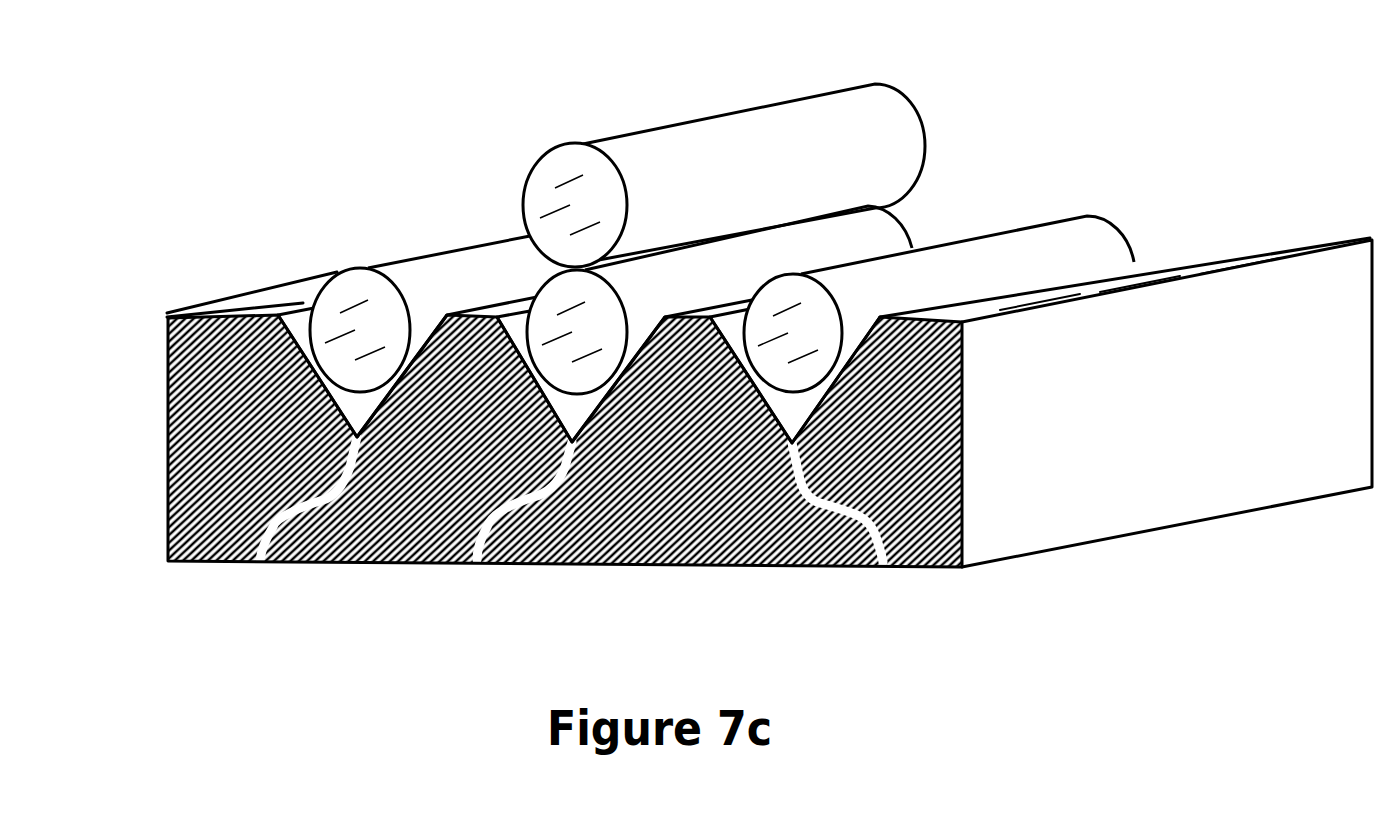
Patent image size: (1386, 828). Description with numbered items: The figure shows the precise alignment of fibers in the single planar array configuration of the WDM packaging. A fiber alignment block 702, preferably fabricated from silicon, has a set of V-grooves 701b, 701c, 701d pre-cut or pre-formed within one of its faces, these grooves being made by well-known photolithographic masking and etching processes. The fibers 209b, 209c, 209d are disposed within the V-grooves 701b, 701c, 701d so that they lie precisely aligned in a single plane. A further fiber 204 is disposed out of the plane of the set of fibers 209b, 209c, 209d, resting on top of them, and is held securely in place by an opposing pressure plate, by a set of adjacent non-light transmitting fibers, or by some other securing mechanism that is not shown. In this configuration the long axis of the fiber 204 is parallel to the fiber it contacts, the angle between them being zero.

The fiber alignment block 702 is at (167, 318).
The V-groove 701b is at (357, 437).
The V-groove 701c is at (572, 442).
The V-groove 701d is at (792, 443).
The fiber 209b is at (370, 270).
The fiber 209c is at (543, 287).
The fiber 209d is at (1022, 225).
The fiber 204 is at (708, 110).